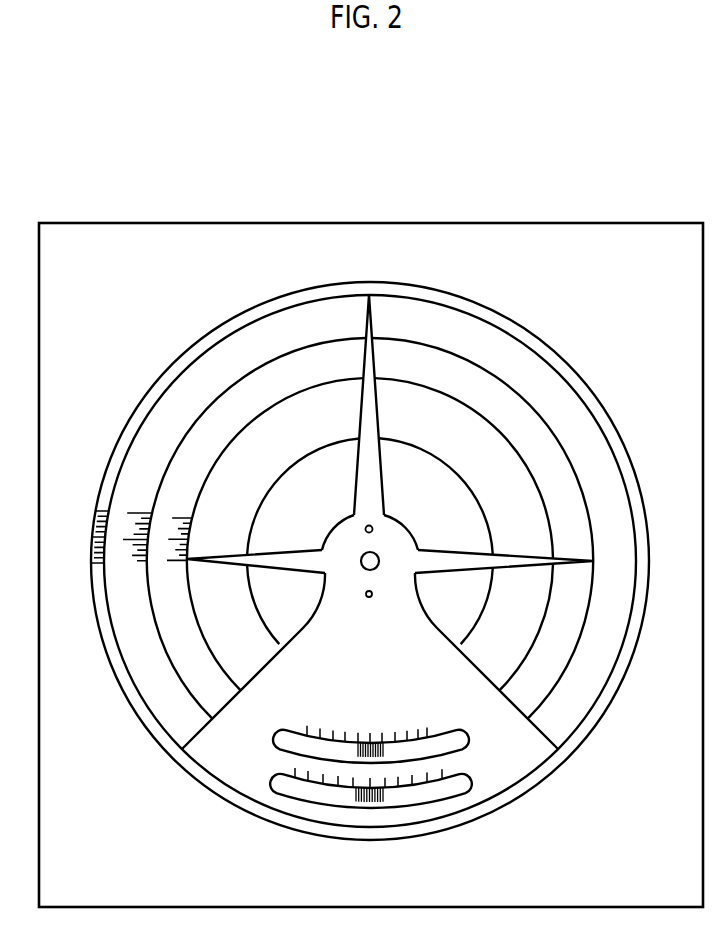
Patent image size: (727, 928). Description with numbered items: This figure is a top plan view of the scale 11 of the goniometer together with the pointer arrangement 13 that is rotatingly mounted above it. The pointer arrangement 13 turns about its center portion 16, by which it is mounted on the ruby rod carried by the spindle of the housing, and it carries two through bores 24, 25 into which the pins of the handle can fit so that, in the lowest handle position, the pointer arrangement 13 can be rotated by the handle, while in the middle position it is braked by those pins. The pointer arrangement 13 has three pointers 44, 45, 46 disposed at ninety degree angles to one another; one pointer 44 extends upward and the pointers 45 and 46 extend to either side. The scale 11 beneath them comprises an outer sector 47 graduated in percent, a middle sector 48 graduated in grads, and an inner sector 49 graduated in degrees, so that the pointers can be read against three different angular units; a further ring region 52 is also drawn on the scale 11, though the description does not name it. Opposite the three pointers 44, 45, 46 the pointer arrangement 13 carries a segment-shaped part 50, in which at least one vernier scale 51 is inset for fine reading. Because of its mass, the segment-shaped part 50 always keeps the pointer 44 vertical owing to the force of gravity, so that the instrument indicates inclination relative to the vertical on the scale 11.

The scale 11 is at (499, 308).
The pointer arrangement 13 is at (388, 463).
The center portion 16 is at (379, 557).
The through bore 24 is at (375, 525).
The through bore 25 is at (377, 598).
The pointer 44 is at (363, 358).
The pointer 45 is at (513, 562).
The pointer 46 is at (289, 569).
The outer sector 47 is at (133, 677).
The middle sector 48 is at (578, 480).
The inner sector 49 is at (272, 489).
The segment-shaped part 50 is at (473, 693).
The vernier scale 51 is at (356, 742).
The intermediate ring 52 is at (213, 377).